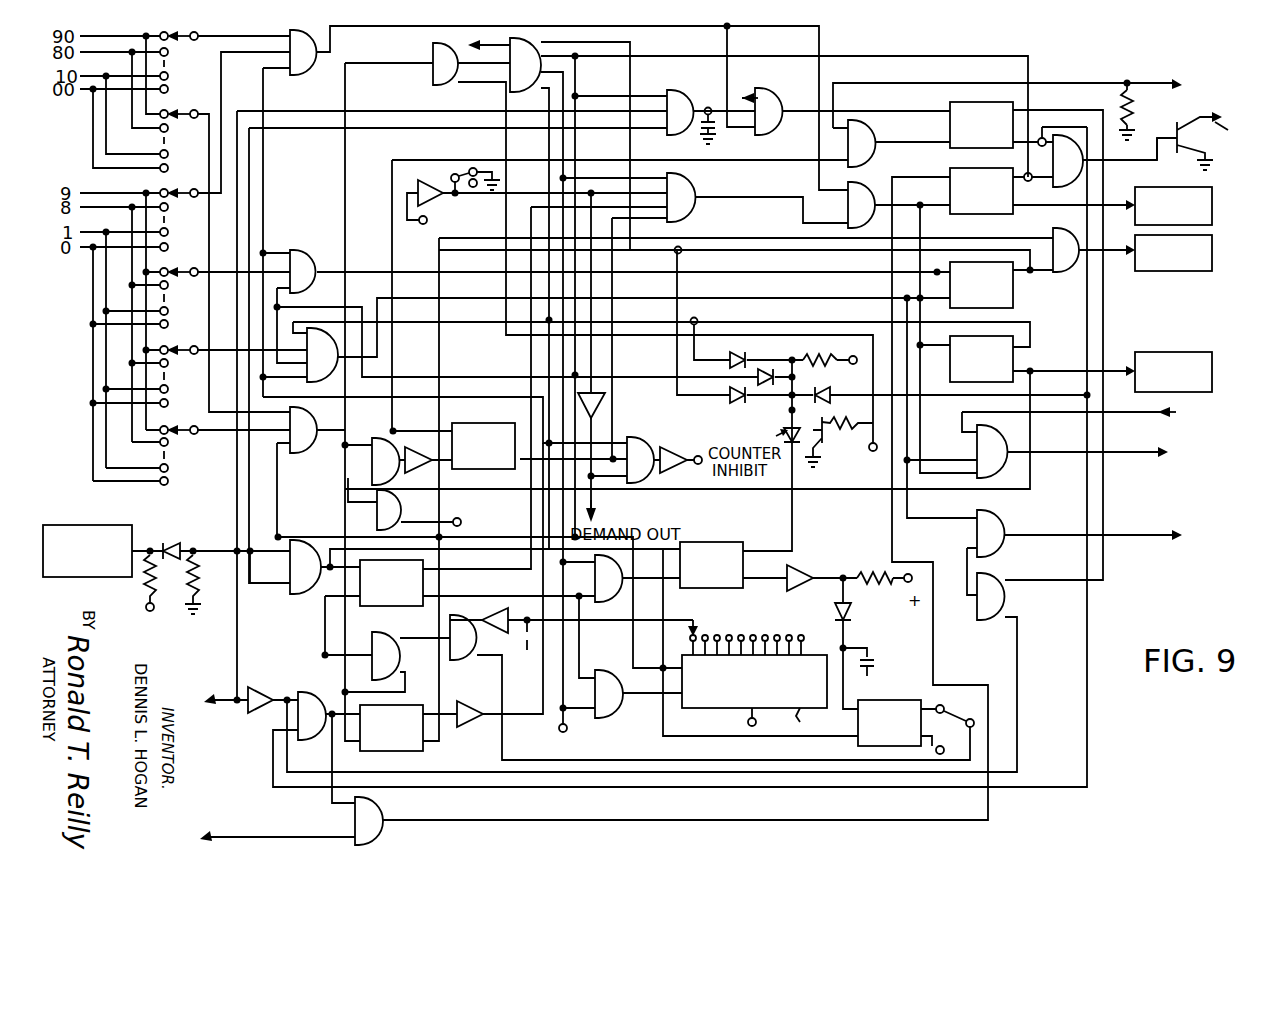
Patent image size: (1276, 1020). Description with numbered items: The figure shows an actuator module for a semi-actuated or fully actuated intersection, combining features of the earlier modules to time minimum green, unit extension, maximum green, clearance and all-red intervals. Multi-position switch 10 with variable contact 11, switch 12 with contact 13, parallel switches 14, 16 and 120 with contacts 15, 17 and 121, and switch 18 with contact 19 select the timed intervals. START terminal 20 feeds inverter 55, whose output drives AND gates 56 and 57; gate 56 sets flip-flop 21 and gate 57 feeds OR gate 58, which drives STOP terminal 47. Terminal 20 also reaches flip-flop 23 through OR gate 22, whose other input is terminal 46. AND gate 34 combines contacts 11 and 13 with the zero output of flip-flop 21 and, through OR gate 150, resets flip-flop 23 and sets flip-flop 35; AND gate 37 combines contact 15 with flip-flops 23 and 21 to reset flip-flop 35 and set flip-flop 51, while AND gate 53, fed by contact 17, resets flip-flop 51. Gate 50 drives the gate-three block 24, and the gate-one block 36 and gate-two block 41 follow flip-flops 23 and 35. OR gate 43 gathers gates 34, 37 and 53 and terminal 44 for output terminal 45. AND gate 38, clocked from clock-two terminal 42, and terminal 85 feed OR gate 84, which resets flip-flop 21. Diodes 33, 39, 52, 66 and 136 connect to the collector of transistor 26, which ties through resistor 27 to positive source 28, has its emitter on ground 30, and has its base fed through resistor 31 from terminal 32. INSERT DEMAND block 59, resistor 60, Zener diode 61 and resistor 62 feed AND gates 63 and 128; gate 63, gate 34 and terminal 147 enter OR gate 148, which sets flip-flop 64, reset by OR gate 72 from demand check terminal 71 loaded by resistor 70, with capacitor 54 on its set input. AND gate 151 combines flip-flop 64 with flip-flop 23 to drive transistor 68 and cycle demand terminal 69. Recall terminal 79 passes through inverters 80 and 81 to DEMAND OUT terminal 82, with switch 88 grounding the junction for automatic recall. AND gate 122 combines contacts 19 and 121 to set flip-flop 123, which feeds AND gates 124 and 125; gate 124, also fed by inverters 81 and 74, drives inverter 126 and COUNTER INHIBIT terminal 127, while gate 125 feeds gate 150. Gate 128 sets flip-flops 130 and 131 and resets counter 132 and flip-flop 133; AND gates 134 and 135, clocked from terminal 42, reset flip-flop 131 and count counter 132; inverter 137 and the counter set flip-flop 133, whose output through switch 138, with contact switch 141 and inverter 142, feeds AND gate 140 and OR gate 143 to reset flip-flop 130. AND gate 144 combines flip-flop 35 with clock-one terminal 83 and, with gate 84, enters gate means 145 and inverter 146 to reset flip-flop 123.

The first multi-position switch 10 is at (193, 86).
The variable contact 11 is at (186, 42).
The second multiposition switch 12 is at (193, 243).
The variable contact 13 is at (186, 199).
The third multiposition switch 14 is at (193, 320).
The variable contact 15 is at (186, 277).
The switch 16 is at (193, 400).
The variable contact 17 is at (186, 356).
The switch 18 is at (193, 163).
The contact 19 is at (186, 119).
The input terminal 20 is at (203, 702).
The flip-flop 21 is at (401, 737).
The OR gate 22 is at (386, 800).
The flip-flop 23 is at (991, 200).
The block labeled GATE 3 24 is at (1212, 237).
The transistor 26 is at (803, 436).
The resistor 27 is at (822, 347).
The source of positive energizing potential 28 is at (494, 482).
The ground 30 is at (715, 368).
The resistor 31 is at (847, 434).
The input terminal 32 is at (879, 457).
The diode 33 is at (792, 375).
The AND gate 34 is at (316, 66).
The flip-flop 35 is at (991, 368).
The block labeled GATE 1 36 is at (1212, 190).
The AND gate 37 is at (312, 254).
The AND gate 38 is at (512, 44).
The diode 39 is at (728, 357).
The block labeled GATE 2 41 is at (1192, 346).
The input terminal 42 is at (558, 728).
The OR gate 43 is at (1000, 436).
The input terminal 44 is at (1179, 411).
The output terminal 45 is at (1174, 448).
The input terminal 46 is at (277, 825).
The output terminal 47 is at (1188, 528).
The gate 50 is at (1068, 232).
The flip-flop 51 is at (991, 294).
The diode 52 is at (745, 405).
The AND gate 53 is at (332, 375).
The capacitor 54 is at (698, 135).
The inverter 55 is at (266, 680).
The AND gate 56 is at (306, 742).
The AND gate 57 is at (1004, 596).
The OR gate 58 is at (1004, 516).
The block labeled INSERT DEMAND 59 is at (112, 530).
The resistor 60 is at (156, 578).
The Zener diode 61 is at (178, 536).
The resistor 62 is at (199, 578).
The AND gate 63 is at (668, 92).
The flip-flop 64 is at (991, 134).
The diode 66 is at (838, 381).
The transistor 68 is at (1207, 145).
The cycle demand output terminal 69 is at (1235, 134).
The resistor 70 is at (1133, 105).
The demand check input terminal 71 is at (1175, 80).
The OR gate 72 is at (873, 128).
The inverter 74 is at (472, 722).
The recall input terminal 79 is at (450, 229).
The first inverter 80 is at (416, 186).
The second inverter 81 is at (582, 405).
The output terminal 82 is at (594, 512).
The input terminal 83 is at (461, 525).
The OR gate 84 is at (432, 50).
The input terminal 85 is at (486, 52).
The switch 88 is at (450, 176).
The switch 120 is at (203, 478).
The variable contact 121 is at (186, 435).
The AND gate 122 is at (320, 412).
The flip-flop 123 is at (497, 455).
The AND gate 124 is at (645, 436).
The AND gate 125 is at (696, 176).
The inverter 126 is at (676, 441).
The output terminal 127 is at (696, 464).
The AND gate 128 is at (288, 571).
The flip-flop 130 is at (405, 592).
The flip-flop 131 is at (725, 574).
The counter 132 is at (814, 721).
The flip-flop 133 is at (903, 732).
The AND gate 134 is at (594, 585).
The AND gate 135 is at (604, 670).
The diode 136 is at (770, 431).
The inverter 137 is at (808, 566).
The switch 138 is at (960, 706).
The AND gate 140 is at (468, 650).
The variable contact switch 141 is at (776, 625).
The inverter 142 is at (494, 632).
The OR gate 143 is at (400, 655).
The AND gate 144 is at (401, 511).
The gate means 145 is at (396, 446).
The inverter 146 is at (396, 474).
The input terminal 147 is at (748, 92).
The OR gate 148 is at (782, 90).
The OR gate 150 is at (870, 188).
The AND gate 151 is at (1054, 186).